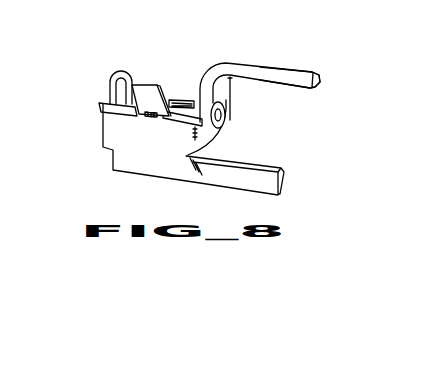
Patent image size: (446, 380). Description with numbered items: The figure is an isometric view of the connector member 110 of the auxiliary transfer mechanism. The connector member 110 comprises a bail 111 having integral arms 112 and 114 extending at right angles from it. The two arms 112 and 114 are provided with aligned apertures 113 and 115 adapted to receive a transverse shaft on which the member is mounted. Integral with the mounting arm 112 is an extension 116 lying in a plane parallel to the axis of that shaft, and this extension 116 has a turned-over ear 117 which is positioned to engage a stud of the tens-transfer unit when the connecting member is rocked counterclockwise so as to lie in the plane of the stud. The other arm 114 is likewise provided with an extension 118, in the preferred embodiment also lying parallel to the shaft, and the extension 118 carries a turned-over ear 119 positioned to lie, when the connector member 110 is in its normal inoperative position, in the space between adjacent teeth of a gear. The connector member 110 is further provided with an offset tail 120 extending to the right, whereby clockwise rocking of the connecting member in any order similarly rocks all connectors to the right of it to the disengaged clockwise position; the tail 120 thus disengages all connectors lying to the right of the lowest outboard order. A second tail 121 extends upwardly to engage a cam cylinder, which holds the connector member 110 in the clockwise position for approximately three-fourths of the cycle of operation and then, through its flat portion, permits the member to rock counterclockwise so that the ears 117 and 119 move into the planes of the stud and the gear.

The connector member 110 is at (211, 72).
The bail 111 is at (118, 136).
The arm 112 is at (222, 92).
The aperture 113 is at (223, 118).
The arm 114 is at (115, 82).
The aperture 115 is at (112, 100).
The extension 116 is at (272, 79).
The turned-over ear 117 is at (306, 84).
The extension 118 is at (172, 105).
The turned-over ear 119 is at (195, 103).
The offset tail 120 is at (245, 175).
The tail 121 is at (142, 92).